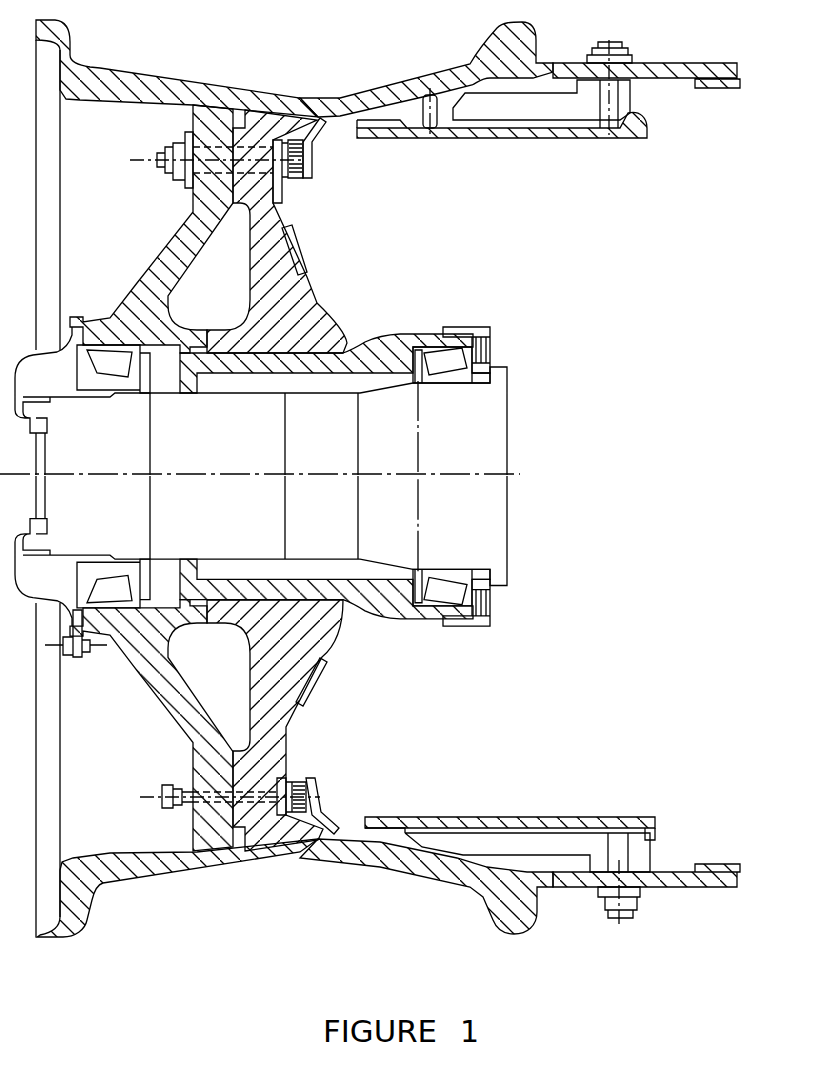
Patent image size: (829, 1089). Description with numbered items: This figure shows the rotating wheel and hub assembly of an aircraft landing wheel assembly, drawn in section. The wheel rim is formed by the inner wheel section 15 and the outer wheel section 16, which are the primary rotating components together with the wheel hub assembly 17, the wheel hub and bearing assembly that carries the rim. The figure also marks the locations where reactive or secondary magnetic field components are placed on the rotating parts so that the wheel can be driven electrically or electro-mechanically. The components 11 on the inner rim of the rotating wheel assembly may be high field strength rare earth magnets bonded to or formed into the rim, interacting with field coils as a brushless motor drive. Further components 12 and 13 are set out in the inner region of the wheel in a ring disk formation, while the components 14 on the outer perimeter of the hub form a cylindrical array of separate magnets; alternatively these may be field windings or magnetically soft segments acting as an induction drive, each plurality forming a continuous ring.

The secondary magnetic field components on the inner rim 11 is at (710, 864).
The secondary magnetic field components in ring disk formation 12 is at (330, 823).
The secondary magnetic field components in ring disk formation 13 is at (317, 685).
The secondary magnetic field components on the hub perimeter 14 is at (473, 627).
The inner wheel section 15 is at (417, 873).
The outer wheel section 16 is at (143, 877).
The wheel hub assembly 17 is at (413, 613).